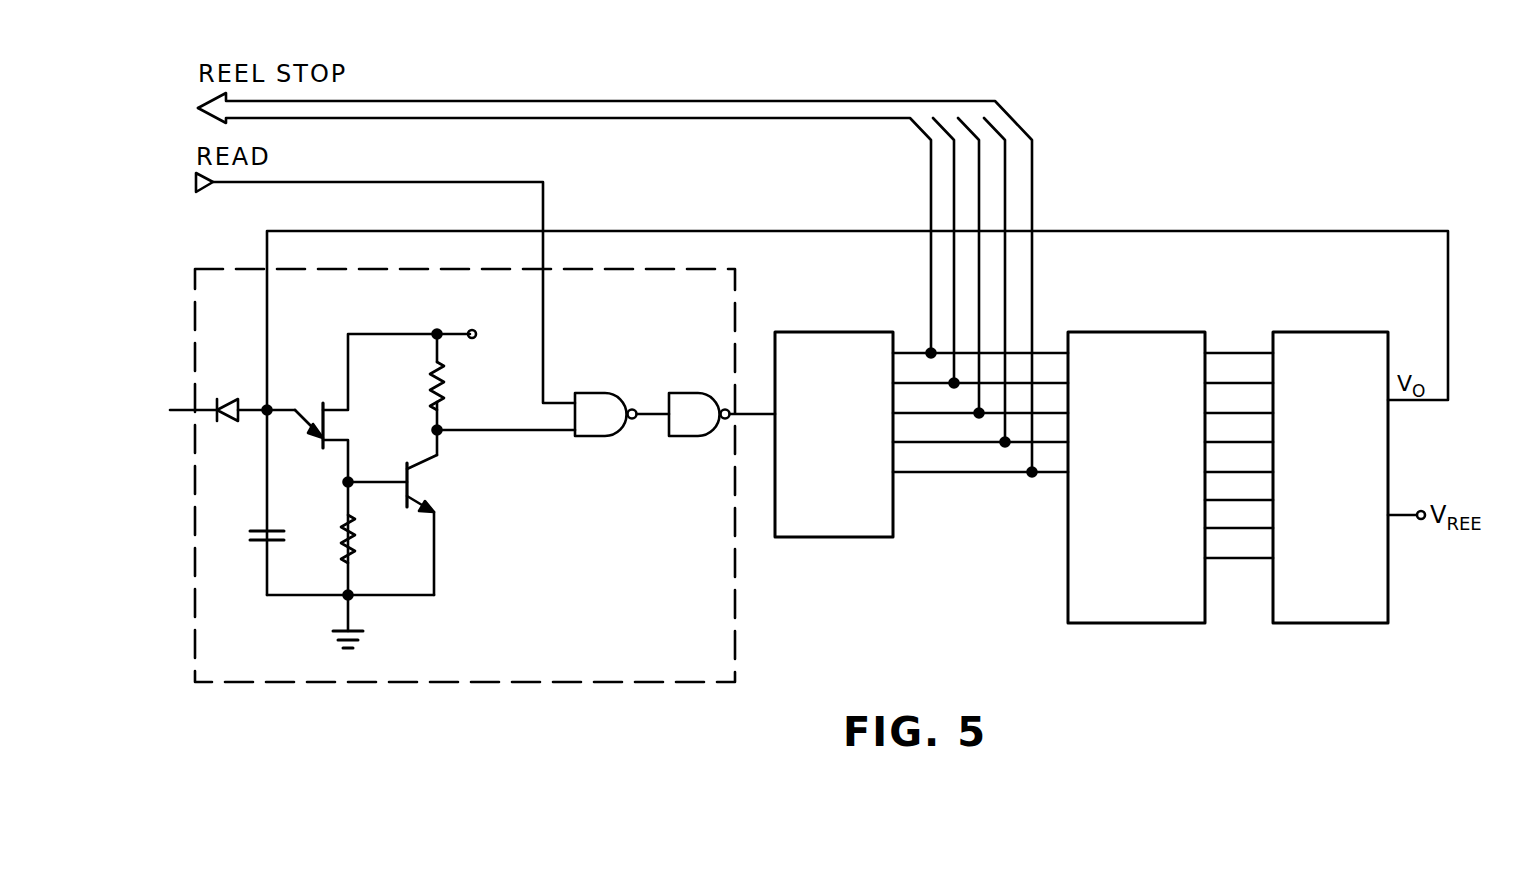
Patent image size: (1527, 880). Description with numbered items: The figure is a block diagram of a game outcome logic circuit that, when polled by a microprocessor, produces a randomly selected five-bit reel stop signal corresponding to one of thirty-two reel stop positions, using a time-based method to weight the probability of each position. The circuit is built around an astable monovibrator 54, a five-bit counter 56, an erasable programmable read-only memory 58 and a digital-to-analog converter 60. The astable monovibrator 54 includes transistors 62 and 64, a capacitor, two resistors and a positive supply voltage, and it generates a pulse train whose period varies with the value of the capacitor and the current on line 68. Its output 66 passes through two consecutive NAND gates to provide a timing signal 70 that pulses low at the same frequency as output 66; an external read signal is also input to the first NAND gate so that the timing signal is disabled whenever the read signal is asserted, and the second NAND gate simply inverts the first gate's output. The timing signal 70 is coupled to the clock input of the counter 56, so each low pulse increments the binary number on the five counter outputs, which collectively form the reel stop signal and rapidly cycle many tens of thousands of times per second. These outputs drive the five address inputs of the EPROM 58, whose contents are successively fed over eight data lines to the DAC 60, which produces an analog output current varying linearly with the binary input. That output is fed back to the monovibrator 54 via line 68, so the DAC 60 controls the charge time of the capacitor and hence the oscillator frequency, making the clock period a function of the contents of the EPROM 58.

The astable monovibrator 54 is at (291, 683).
The five-bit counter 56 is at (833, 537).
The erasable programmable read-only memory (EPROM) 58 is at (1128, 623).
The digital-to-analog converter (DAC) 60 is at (1333, 623).
The transistor 62 is at (337, 407).
The transistor 64 is at (415, 470).
The output 66 is at (527, 432).
The line 68 is at (267, 322).
The timing signal 70 is at (752, 410).